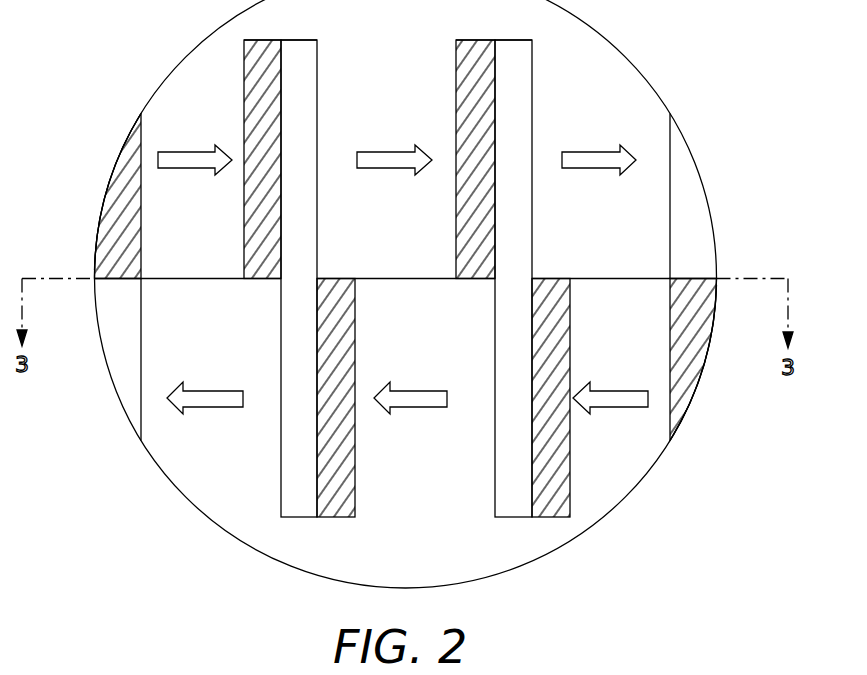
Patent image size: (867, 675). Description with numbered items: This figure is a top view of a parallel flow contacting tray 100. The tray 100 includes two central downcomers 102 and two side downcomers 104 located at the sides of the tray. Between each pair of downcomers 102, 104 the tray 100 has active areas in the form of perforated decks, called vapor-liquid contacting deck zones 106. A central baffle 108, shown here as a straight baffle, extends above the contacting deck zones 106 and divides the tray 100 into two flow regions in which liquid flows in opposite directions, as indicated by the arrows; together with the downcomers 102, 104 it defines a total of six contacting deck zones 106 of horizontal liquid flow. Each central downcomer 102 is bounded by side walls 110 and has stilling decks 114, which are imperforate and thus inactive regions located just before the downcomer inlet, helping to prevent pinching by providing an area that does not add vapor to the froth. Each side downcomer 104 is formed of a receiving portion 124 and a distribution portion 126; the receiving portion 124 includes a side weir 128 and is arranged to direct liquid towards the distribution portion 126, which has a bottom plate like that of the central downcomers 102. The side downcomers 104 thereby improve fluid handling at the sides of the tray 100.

The contacting tray 100 is at (125, 52).
The central downcomer 102 is at (310, 40).
The side downcomer 104 is at (113, 448).
The vapor-liquid contacting deck zone 106 is at (608, 50).
The central baffle 108 is at (197, 278).
The side wall 110 is at (318, 203).
The stilling deck 114 is at (256, 88).
The receiving portion 124 is at (706, 212).
The distribution portion 126 is at (108, 200).
The side weir 128 is at (670, 211).